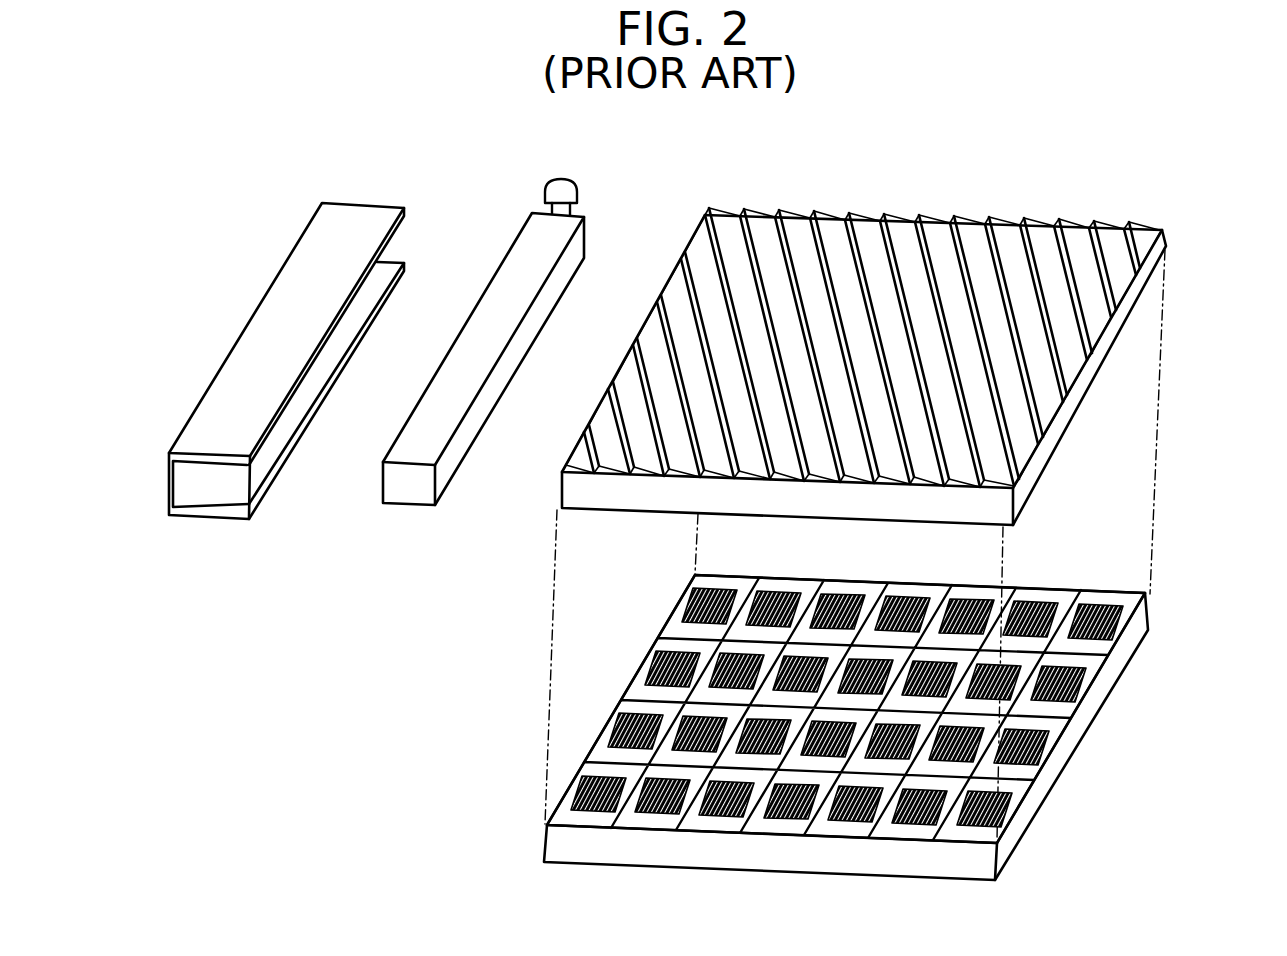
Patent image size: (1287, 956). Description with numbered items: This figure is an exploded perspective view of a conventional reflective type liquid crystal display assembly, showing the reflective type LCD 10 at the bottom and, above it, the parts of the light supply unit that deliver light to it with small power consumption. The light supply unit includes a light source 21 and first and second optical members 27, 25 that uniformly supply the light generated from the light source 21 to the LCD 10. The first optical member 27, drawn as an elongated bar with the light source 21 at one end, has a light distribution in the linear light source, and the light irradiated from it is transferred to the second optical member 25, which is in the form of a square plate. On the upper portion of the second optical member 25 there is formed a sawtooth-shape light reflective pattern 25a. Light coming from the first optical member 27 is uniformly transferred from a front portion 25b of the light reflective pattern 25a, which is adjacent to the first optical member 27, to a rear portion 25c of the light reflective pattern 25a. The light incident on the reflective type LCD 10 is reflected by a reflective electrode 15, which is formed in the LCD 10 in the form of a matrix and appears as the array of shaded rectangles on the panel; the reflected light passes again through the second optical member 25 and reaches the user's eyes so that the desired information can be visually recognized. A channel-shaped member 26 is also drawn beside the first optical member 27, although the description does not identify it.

The LCD 10 is at (878, 727).
The reflective electrode 15 is at (1033, 755).
The light source 21 is at (558, 178).
The second optical member 25 is at (881, 355).
The light reflective pattern 25a is at (1075, 232).
The front portion 25b is at (559, 489).
The rear portion 25c is at (1100, 369).
The reflector 26 is at (368, 205).
The first optical member 27 is at (470, 427).